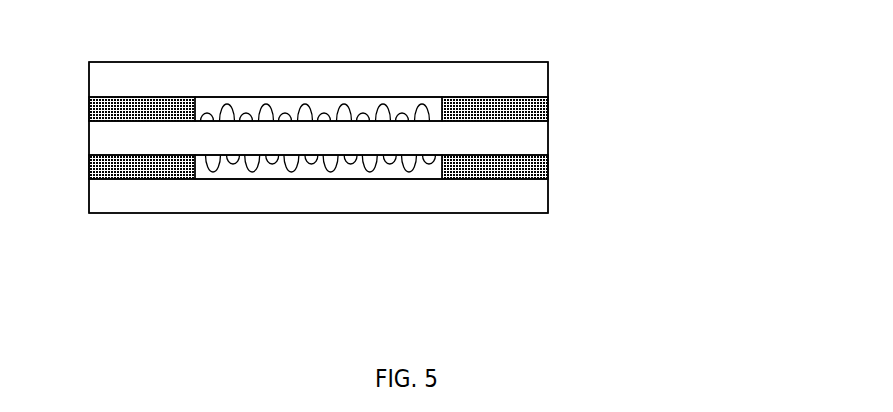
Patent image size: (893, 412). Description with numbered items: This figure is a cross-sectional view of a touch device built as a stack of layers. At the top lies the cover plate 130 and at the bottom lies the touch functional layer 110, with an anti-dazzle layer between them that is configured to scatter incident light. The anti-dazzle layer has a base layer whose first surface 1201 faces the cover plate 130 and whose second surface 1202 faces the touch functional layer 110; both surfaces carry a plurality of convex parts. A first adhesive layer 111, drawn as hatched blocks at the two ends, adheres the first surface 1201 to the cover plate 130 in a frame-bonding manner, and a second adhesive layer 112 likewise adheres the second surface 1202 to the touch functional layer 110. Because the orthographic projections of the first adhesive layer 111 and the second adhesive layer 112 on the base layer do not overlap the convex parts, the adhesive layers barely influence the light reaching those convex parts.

The touch functional layer 110 is at (530, 192).
The cover plate 130 is at (533, 83).
The first adhesive layer 111 is at (133, 103).
The second adhesive layer 112 is at (548, 153).
The first surface 1201 is at (223, 120).
The second surface 1202 is at (478, 165).